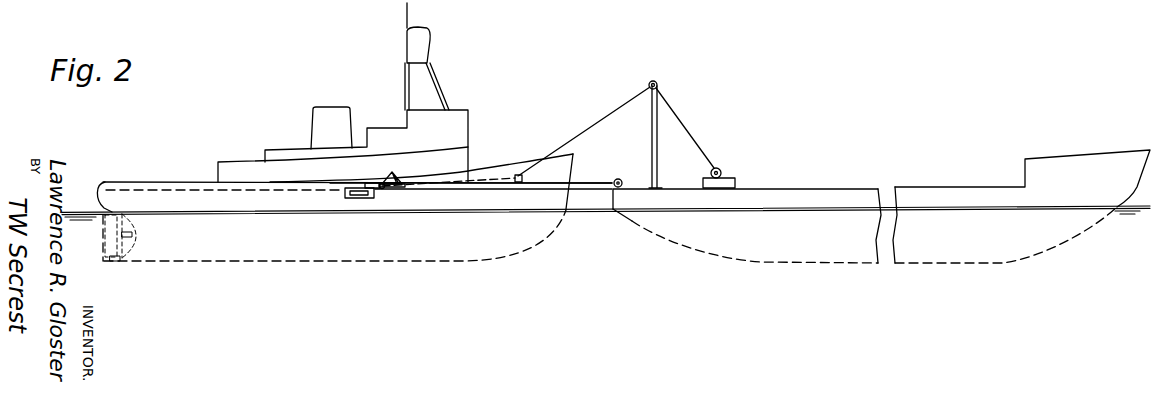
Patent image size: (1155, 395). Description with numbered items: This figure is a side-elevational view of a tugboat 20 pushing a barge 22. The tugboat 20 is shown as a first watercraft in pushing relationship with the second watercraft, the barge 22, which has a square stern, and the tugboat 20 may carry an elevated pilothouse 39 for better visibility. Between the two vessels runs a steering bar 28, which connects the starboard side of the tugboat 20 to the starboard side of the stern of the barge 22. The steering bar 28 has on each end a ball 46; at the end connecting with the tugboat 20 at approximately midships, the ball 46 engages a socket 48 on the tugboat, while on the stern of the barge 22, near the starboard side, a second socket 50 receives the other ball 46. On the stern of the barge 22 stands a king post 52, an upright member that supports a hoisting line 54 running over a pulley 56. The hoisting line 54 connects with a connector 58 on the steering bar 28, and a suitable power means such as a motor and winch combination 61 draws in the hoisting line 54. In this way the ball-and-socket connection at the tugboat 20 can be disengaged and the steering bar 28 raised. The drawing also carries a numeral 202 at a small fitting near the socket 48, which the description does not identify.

The tugboat 20 is at (141, 178).
The barge 22 is at (1071, 152).
The steering bar 28 is at (590, 177).
The elevated pilothouse 39 is at (428, 42).
The ball 46 is at (630, 166).
The socket 48 is at (352, 198).
The socket 50 is at (622, 189).
The king post 52 is at (658, 166).
The hoisting line 54 is at (600, 117).
The pulley 56 is at (658, 83).
The connector 58 is at (520, 175).
The motor and winch combination 61 is at (730, 180).
The A-frame fitting 202 is at (397, 177).